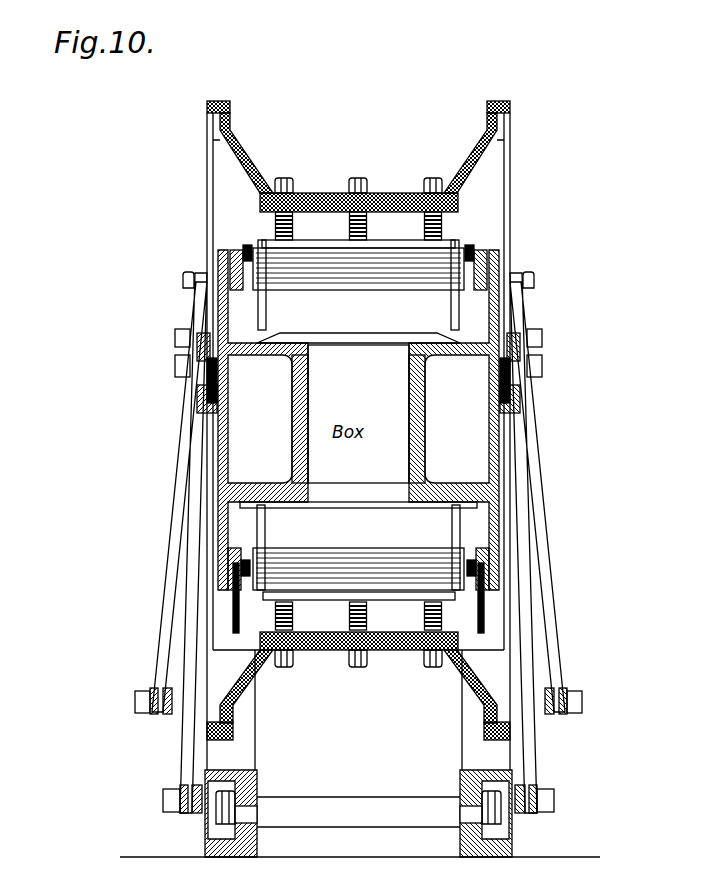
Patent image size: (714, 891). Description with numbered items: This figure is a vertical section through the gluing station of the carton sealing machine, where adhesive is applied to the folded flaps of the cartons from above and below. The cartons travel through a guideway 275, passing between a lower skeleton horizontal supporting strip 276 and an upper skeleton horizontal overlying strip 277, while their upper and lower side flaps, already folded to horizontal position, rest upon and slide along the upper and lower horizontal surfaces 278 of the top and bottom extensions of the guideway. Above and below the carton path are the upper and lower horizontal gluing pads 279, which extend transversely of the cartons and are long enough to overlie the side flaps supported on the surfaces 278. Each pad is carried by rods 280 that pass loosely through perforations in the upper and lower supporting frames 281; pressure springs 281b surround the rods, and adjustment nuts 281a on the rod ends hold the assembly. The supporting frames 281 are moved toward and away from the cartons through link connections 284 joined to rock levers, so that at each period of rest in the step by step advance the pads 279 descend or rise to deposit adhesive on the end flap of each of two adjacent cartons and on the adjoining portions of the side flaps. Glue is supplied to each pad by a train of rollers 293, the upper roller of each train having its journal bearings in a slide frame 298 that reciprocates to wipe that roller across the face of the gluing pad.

The guideway 275 is at (425, 425).
The lower skeleton horizontal supporting strip 276 is at (400, 503).
The upper skeleton horizontal overlying strip 277 is at (325, 340).
The horizontal surfaces 278 is at (452, 483).
The gluing pads 279 is at (452, 240).
The rods 280 is at (356, 178).
The supporting frames 281 is at (398, 193).
The adjustment nuts 281a is at (274, 180).
The pressure springs 281b is at (355, 238).
The link connections 284 is at (190, 700).
The train of rollers 293 is at (310, 280).
The slide frame 298 is at (475, 303).